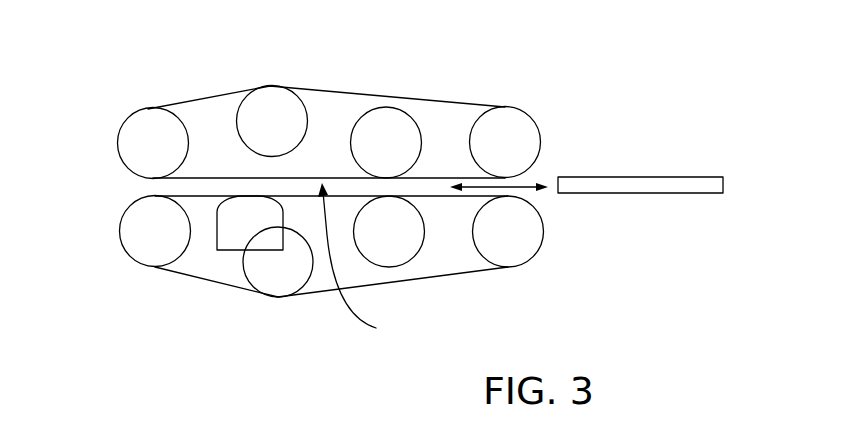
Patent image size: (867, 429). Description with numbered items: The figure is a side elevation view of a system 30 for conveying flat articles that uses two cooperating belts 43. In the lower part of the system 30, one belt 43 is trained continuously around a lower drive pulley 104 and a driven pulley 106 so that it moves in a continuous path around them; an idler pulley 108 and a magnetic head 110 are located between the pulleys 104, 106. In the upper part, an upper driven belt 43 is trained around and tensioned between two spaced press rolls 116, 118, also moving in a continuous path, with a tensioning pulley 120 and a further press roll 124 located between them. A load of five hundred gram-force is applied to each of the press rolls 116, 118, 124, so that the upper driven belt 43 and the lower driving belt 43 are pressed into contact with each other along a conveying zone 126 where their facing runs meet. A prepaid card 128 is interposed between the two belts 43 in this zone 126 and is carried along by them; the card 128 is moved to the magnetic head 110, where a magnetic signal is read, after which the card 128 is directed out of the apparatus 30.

The system 30 is at (598, 108).
The belt 43 is at (367, 90).
The lower drive pulley 104 is at (543, 235).
The driven pulley 106 is at (153, 267).
The idler pulley 108 is at (275, 297).
The magnetic head 110 is at (229, 250).
The press roll 116 is at (147, 108).
The press roll 118 is at (521, 108).
The tensioning pulley 120 is at (281, 85).
The press roll 124 is at (415, 118).
The conveying zone 126 is at (374, 270).
The prepaid card 128 is at (682, 177).